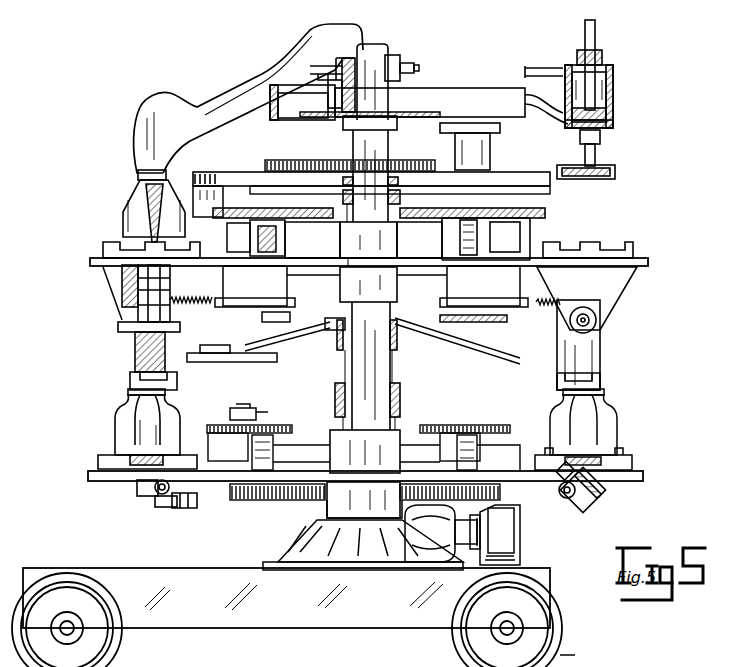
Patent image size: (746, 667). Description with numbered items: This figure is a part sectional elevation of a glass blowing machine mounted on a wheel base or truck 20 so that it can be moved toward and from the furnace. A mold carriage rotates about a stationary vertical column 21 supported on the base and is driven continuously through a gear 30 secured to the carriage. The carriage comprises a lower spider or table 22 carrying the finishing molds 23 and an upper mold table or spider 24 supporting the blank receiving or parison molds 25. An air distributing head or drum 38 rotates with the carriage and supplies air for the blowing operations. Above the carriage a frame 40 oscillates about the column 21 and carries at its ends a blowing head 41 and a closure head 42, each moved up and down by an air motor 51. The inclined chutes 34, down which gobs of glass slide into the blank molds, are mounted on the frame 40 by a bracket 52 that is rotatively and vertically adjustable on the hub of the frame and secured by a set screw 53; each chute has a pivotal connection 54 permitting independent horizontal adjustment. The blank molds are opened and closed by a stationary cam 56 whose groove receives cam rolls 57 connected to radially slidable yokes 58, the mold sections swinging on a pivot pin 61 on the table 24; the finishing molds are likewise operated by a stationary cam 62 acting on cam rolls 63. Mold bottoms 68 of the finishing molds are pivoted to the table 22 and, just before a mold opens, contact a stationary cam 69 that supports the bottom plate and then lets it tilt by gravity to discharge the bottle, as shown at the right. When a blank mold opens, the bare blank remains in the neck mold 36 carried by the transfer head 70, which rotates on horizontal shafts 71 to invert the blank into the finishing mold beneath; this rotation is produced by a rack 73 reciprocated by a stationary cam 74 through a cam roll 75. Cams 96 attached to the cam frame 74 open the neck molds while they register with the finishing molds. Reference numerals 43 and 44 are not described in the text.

The wheel base or truck 20 is at (240, 568).
The stationary vertical column 21 is at (398, 368).
The lower spider or table 22 is at (223, 481).
The finishing mold 23 is at (117, 410).
The upper mold table or spider 24 is at (302, 266).
The blank receiving or parison mold 25 is at (128, 205).
The gear 30 is at (300, 500).
The inclined chute 34 is at (233, 92).
The neck mold 36 is at (135, 248).
The air distributing head or drum 38 is at (221, 174).
The frame 40 is at (476, 100).
The blowing head 41 is at (91, 620).
The head 42 is at (617, 172).
The wheel 43 is at (617, 661).
The axle 44 is at (530, 620).
The air motor 51 is at (613, 97).
The bracket 52 is at (345, 58).
The set screw 53 is at (407, 63).
The pivotal connection 54 is at (313, 80).
The stationary cam 56 is at (268, 186).
The cam roll 57 is at (492, 186).
The radially slidable yoke 58 is at (290, 216).
The pivot pin 61 is at (232, 254).
The stationary cam 62 is at (283, 425).
The cam roll 63 is at (247, 409).
The mold bottom 68 is at (137, 455).
The stationary cam 69 is at (180, 510).
The transfer head 70 is at (160, 308).
The horizontal shaft 71 is at (597, 322).
The rack 73 is at (195, 300).
The stationary cam 74 is at (250, 342).
The cam roll 75 is at (262, 318).
The cam 96 is at (249, 362).